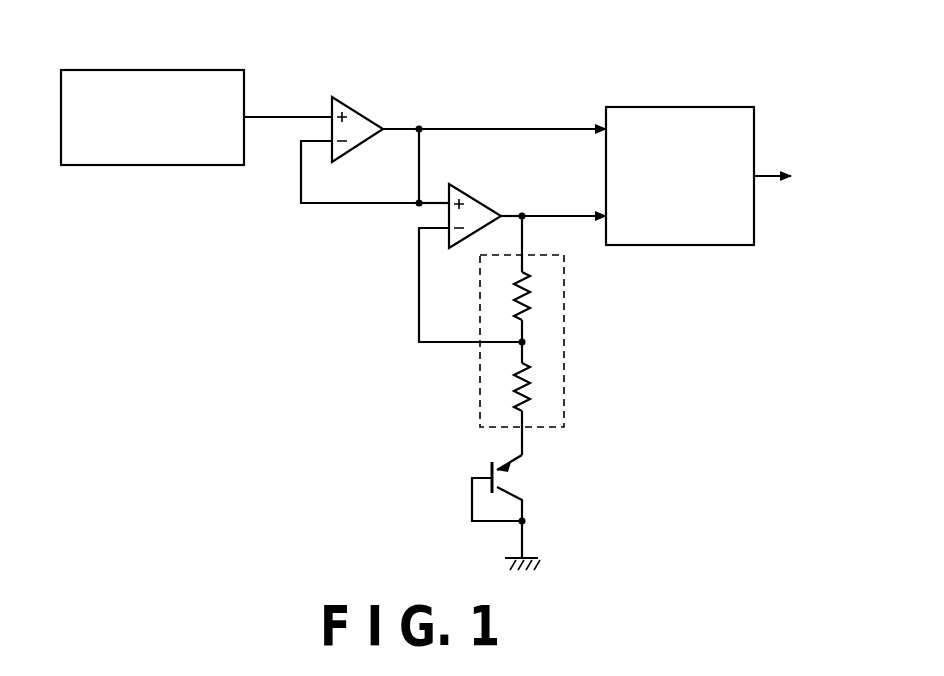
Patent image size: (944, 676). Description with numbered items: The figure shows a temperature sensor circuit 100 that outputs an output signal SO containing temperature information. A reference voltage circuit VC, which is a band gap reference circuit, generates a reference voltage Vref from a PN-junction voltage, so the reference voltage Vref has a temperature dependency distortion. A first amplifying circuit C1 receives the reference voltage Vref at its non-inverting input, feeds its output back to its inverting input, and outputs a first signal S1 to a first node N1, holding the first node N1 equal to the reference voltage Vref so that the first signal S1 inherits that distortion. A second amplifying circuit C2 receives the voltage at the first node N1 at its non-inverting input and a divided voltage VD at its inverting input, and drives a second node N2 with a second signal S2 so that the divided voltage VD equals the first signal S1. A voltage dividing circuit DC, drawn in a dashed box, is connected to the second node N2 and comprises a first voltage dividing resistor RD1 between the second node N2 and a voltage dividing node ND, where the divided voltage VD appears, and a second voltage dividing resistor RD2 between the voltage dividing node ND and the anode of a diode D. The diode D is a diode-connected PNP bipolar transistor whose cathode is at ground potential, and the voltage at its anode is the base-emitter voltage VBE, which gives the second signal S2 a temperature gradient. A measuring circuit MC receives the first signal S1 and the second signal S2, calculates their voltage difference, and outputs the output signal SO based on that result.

The temperature sensor circuit 100 is at (298, 502).
The reference voltage circuit VC is at (148, 70).
The reference voltage Vref is at (288, 102).
The first amplifying circuit C1 is at (361, 108).
The first node N1 is at (419, 122).
The first signal S1 is at (512, 113).
The second amplifying circuit C2 is at (478, 195).
The second node N2 is at (522, 208).
The second signal S2 is at (564, 200).
The measuring circuit MC is at (678, 107).
The output signal SO is at (796, 178).
The divided voltage VD is at (470, 286).
The voltage dividing circuit DC is at (480, 386).
The first voltage dividing resistor RD1 is at (525, 296).
The voltage dividing node ND is at (528, 341).
The second voltage dividing resistor RD2 is at (525, 399).
The voltage at the anode of the diode VBE is at (560, 453).
The diode D is at (512, 461).